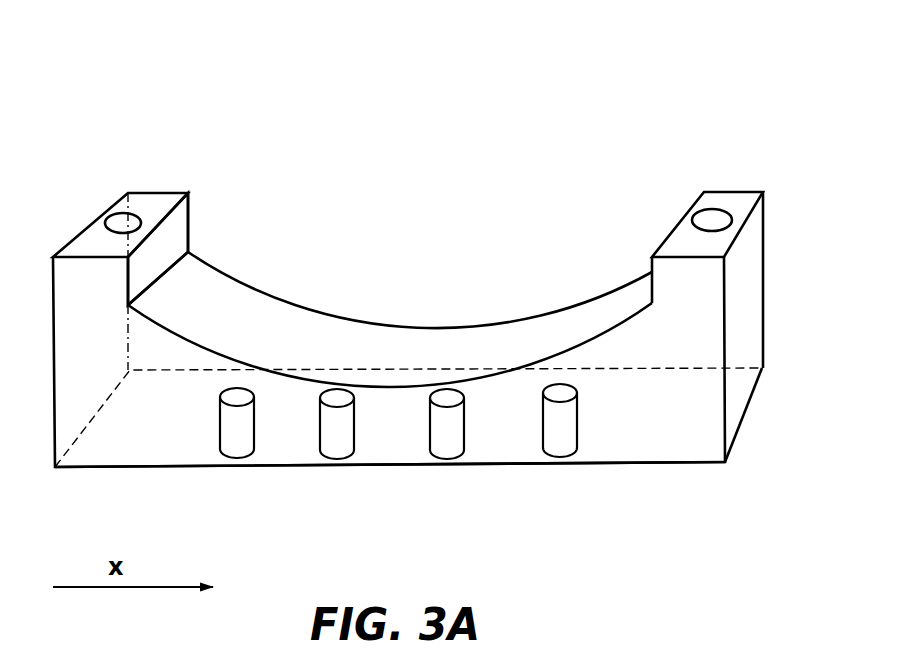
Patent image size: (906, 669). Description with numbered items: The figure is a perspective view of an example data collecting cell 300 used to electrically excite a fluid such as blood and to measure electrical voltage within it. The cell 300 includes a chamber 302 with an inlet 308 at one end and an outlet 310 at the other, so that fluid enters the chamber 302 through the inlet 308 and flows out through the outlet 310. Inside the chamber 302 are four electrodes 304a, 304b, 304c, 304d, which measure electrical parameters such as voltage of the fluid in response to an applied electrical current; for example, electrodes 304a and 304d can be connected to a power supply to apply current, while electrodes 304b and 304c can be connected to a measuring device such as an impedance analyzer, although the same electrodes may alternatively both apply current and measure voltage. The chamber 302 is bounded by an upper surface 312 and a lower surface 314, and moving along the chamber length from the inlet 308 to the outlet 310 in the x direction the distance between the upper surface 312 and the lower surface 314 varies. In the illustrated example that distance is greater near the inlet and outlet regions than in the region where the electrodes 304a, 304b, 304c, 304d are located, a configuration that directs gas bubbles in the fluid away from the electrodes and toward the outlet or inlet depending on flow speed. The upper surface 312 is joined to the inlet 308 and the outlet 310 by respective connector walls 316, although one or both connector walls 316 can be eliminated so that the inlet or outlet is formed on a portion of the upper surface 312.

The data collecting cell 300 is at (410, 273).
The chamber 302 is at (648, 407).
The electrode 304a is at (237, 448).
The electrode 304b is at (337, 449).
The electrode 304c is at (447, 449).
The electrode 304d is at (560, 447).
The inlet 308 is at (123, 225).
The outlet 310 is at (716, 222).
The upper surface 312 is at (375, 350).
The lower surface 314 is at (113, 470).
The connector wall 316 is at (163, 245).